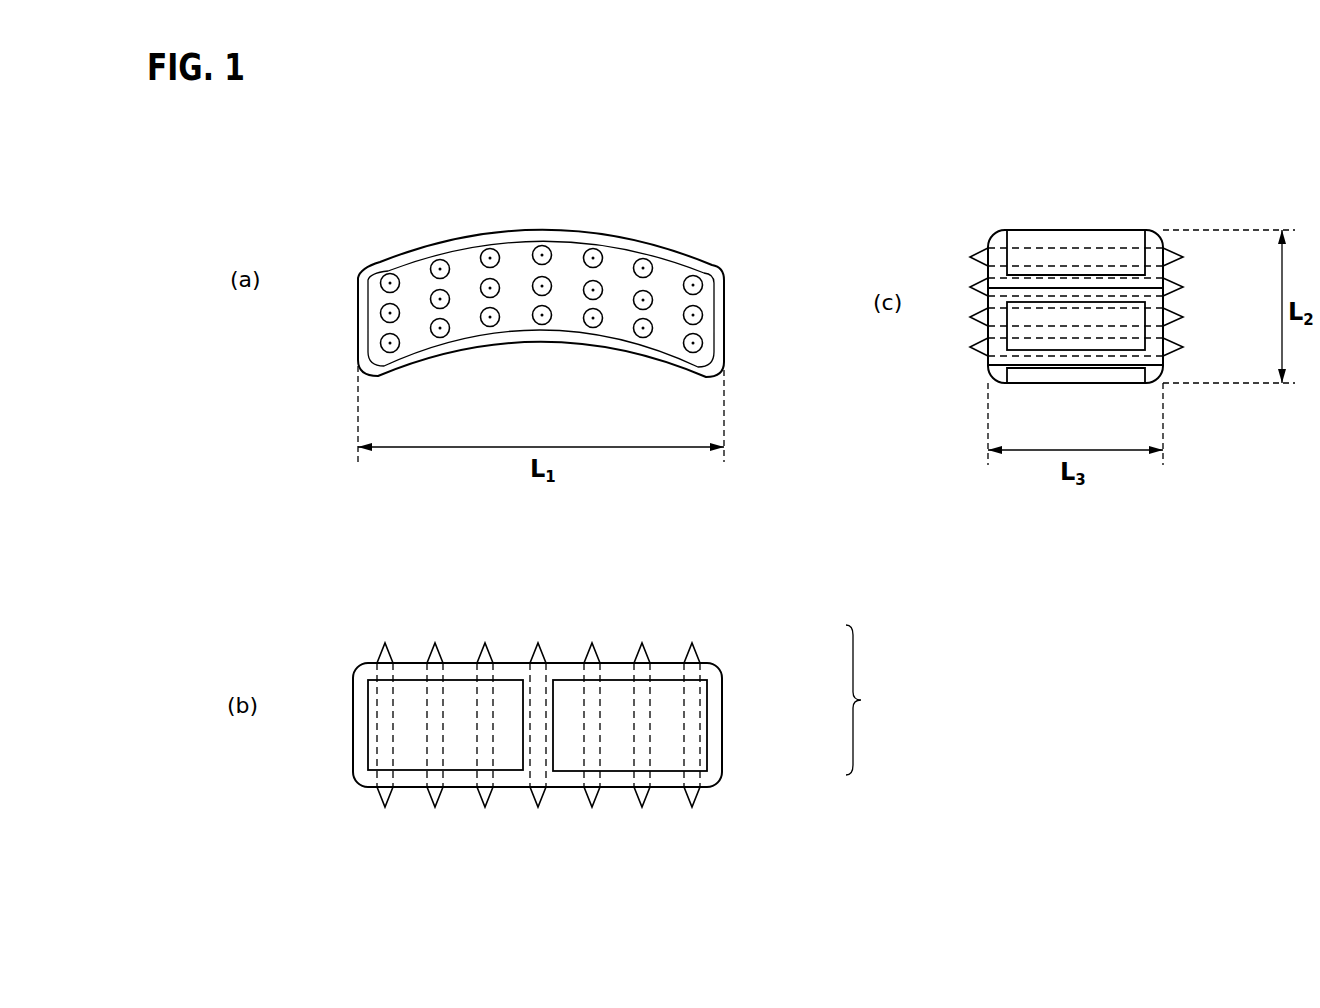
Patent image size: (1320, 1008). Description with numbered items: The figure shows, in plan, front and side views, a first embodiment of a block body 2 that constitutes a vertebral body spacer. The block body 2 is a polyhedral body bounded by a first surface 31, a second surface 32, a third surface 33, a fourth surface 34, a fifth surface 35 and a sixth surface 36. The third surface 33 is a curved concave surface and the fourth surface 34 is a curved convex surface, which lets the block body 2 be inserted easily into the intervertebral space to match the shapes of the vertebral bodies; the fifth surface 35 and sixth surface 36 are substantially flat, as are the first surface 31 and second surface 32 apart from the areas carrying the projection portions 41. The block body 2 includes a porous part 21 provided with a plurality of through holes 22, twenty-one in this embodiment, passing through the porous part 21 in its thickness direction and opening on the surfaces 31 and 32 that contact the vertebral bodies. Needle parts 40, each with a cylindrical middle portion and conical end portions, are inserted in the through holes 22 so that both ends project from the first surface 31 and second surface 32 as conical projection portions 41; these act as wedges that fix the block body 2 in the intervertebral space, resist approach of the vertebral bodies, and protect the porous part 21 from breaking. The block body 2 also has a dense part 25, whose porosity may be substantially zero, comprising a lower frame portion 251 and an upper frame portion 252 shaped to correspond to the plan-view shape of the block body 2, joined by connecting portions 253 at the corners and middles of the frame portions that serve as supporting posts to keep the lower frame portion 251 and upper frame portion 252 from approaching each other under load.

The block body 2 is at (606, 204).
The porous part 21 is at (705, 328).
The through holes 22 is at (648, 718).
The dense part 25 is at (868, 700).
The lower frame portion 251 is at (708, 782).
The upper frame portion 252 is at (478, 241).
The connecting portions 253 is at (715, 732).
The first surface 31 is at (566, 306).
The second surface 32 is at (515, 788).
The third surface 33 is at (497, 350).
The fourth surface 34 is at (646, 243).
The fifth surface 35 is at (358, 318).
The sixth surface 36 is at (724, 310).
The needle parts 40 is at (588, 744).
The projection portions 41 is at (982, 355).